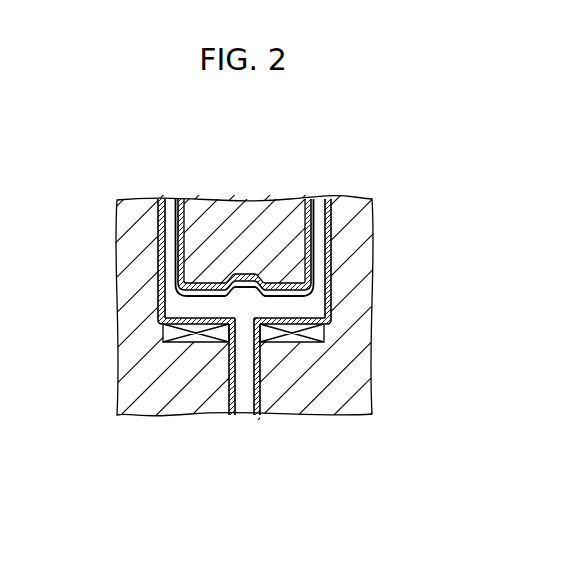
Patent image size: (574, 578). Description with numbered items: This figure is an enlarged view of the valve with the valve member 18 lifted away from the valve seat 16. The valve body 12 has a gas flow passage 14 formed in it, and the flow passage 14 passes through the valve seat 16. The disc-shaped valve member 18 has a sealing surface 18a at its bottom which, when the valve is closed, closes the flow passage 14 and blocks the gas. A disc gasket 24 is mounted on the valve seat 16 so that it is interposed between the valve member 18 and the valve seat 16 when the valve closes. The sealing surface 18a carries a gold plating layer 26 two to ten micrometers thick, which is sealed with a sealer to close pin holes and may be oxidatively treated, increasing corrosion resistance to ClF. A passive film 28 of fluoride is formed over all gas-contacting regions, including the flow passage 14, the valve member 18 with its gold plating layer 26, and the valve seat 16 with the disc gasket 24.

The body 12 is at (348, 238).
The gas flow passage 14 is at (240, 387).
The valve seat 16 is at (185, 332).
The valve member 18 is at (222, 227).
The sealing surface 18a is at (193, 299).
The disc gasket 24 is at (318, 332).
The gold plating layer 26 is at (285, 278).
The passive film 28 is at (327, 203).